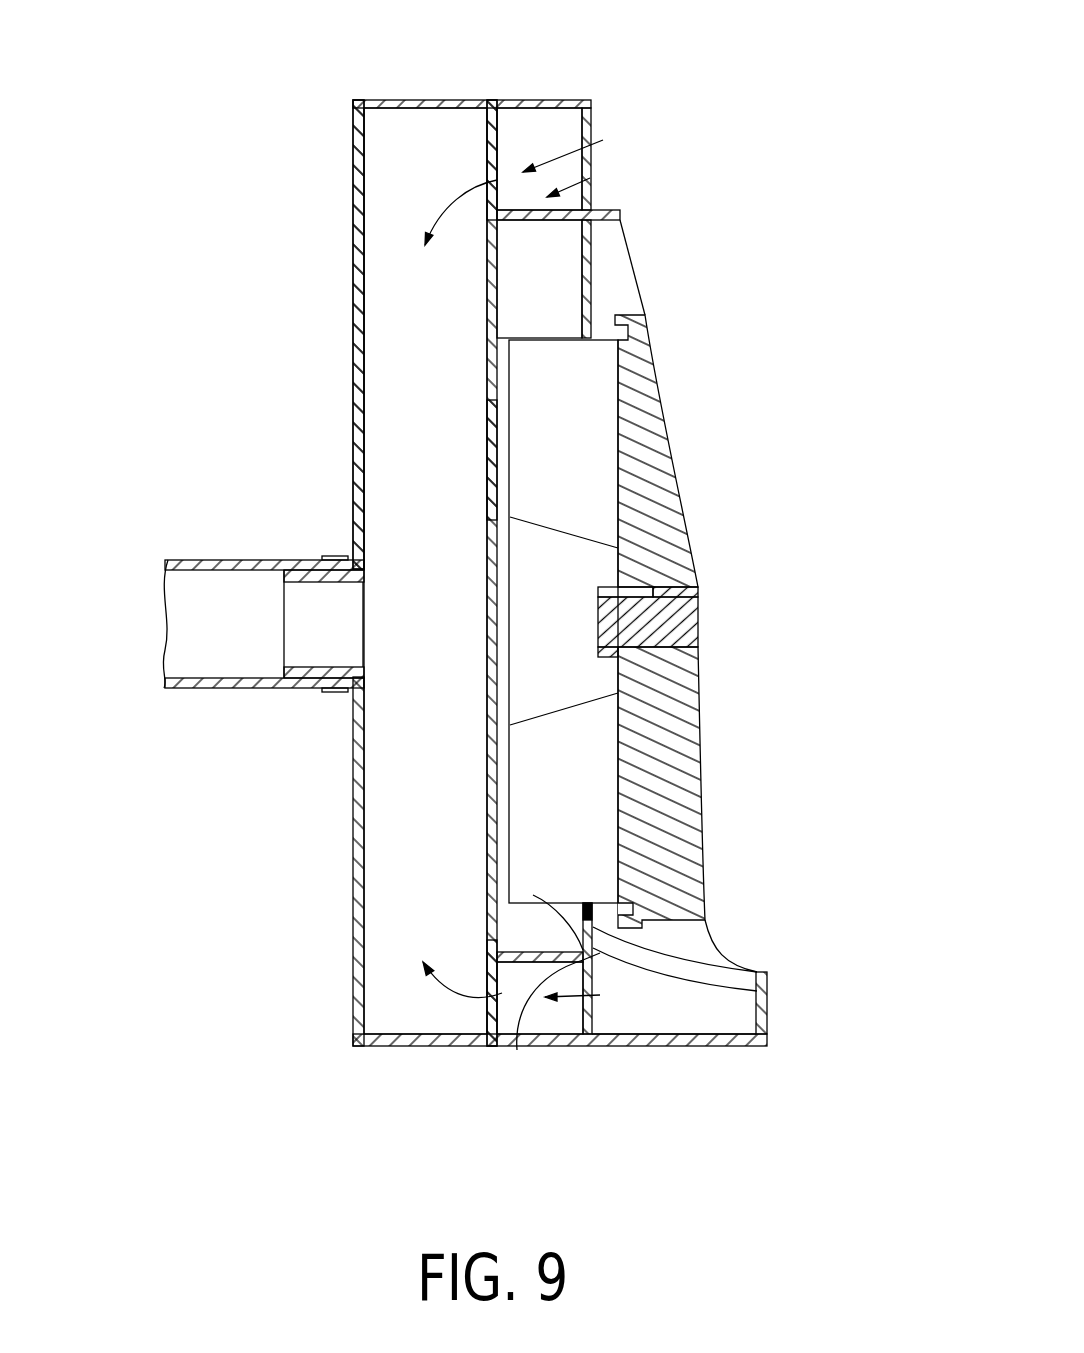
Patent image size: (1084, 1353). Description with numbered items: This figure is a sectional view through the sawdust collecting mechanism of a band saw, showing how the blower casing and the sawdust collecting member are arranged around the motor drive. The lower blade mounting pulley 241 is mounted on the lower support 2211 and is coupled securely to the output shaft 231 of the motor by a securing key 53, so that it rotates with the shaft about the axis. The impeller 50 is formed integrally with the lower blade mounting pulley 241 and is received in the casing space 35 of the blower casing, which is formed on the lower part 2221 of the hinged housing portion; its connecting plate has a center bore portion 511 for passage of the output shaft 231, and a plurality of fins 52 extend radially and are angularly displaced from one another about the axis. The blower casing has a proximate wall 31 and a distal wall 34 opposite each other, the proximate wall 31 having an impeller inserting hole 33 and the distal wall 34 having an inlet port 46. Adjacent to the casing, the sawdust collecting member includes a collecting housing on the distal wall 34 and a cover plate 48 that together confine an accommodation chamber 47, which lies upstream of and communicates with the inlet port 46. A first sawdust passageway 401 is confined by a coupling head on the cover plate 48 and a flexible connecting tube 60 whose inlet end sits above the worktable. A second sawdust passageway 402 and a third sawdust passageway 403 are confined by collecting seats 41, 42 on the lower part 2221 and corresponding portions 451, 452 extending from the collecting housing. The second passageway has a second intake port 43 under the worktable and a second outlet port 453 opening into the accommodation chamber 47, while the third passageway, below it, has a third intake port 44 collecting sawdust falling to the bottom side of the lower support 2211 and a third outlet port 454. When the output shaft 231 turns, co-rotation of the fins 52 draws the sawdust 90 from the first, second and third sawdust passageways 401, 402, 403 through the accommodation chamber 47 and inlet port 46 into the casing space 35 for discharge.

The proximate wall 31 is at (517, 1050).
The impeller inserting hole 33 is at (592, 316).
The distal wall 34 is at (493, 328).
The casing space 35 is at (545, 272).
The collecting seat 41 is at (548, 100).
The collecting seat 42 is at (550, 1050).
The second intake port 43 is at (583, 117).
The third intake port 44 is at (593, 1013).
The inlet port 46 is at (493, 475).
The accommodation chamber 47 is at (387, 490).
The cover plate 48 is at (358, 280).
The impeller 50 is at (745, 969).
The fins 52 is at (757, 991).
The securing key 53 is at (646, 593).
The flexible connecting tube 60 is at (207, 560).
The sawdust 90 is at (590, 178).
The output shaft 231 is at (680, 608).
The lower blade mounting pulley 241 is at (695, 905).
The first sawdust passageway 401 is at (203, 648).
The second sawdust passageway 402 is at (560, 138).
The third sawdust passageway 403 is at (598, 985).
The corresponding portion 451 is at (390, 100).
The corresponding portion 452 is at (418, 1048).
The second outlet port 453 is at (488, 140).
The third outlet port 454 is at (490, 1010).
The center bore portion 511 is at (608, 590).
The lower support 2211 is at (750, 1015).
The lower part 2221 is at (640, 1005).